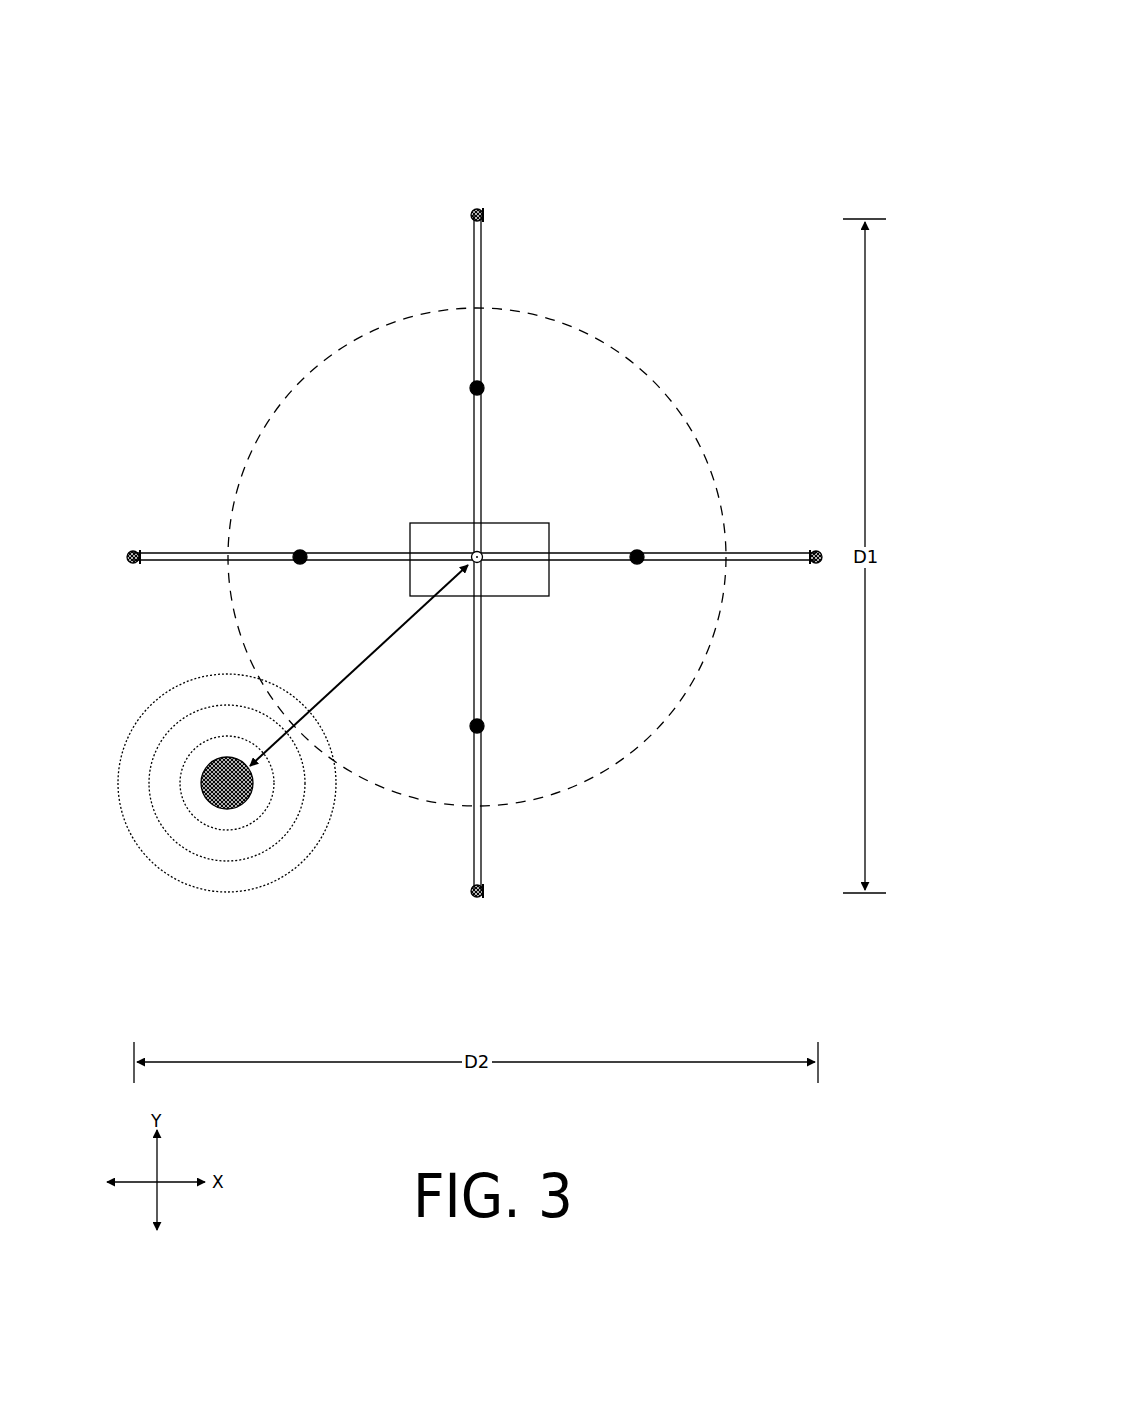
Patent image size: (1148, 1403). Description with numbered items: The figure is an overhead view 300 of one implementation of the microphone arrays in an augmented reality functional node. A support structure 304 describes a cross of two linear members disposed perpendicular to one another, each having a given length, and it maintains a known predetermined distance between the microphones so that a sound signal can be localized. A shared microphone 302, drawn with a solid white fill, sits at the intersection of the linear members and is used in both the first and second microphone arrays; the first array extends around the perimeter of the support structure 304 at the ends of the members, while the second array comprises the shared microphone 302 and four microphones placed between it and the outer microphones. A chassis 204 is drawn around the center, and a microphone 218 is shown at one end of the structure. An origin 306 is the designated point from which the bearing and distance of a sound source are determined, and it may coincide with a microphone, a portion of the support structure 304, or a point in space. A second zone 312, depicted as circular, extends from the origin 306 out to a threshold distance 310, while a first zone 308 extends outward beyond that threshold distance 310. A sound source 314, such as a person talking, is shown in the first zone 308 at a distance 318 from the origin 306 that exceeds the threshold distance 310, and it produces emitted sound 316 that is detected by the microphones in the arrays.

The overhead view 300 is at (782, 26).
The support structure 304 is at (481, 271).
The shared microphone 302 is at (472, 552).
The chassis 204 is at (507, 523).
The origin 306 is at (481, 562).
The distance 318 is at (359, 665).
The second zone 312 is at (477, 563).
The threshold distance 310 is at (578, 784).
The first zone 308 is at (715, 865).
The microphone 218 is at (483, 897).
The sound source 314 is at (231, 807).
The emitted sound 316 is at (232, 893).